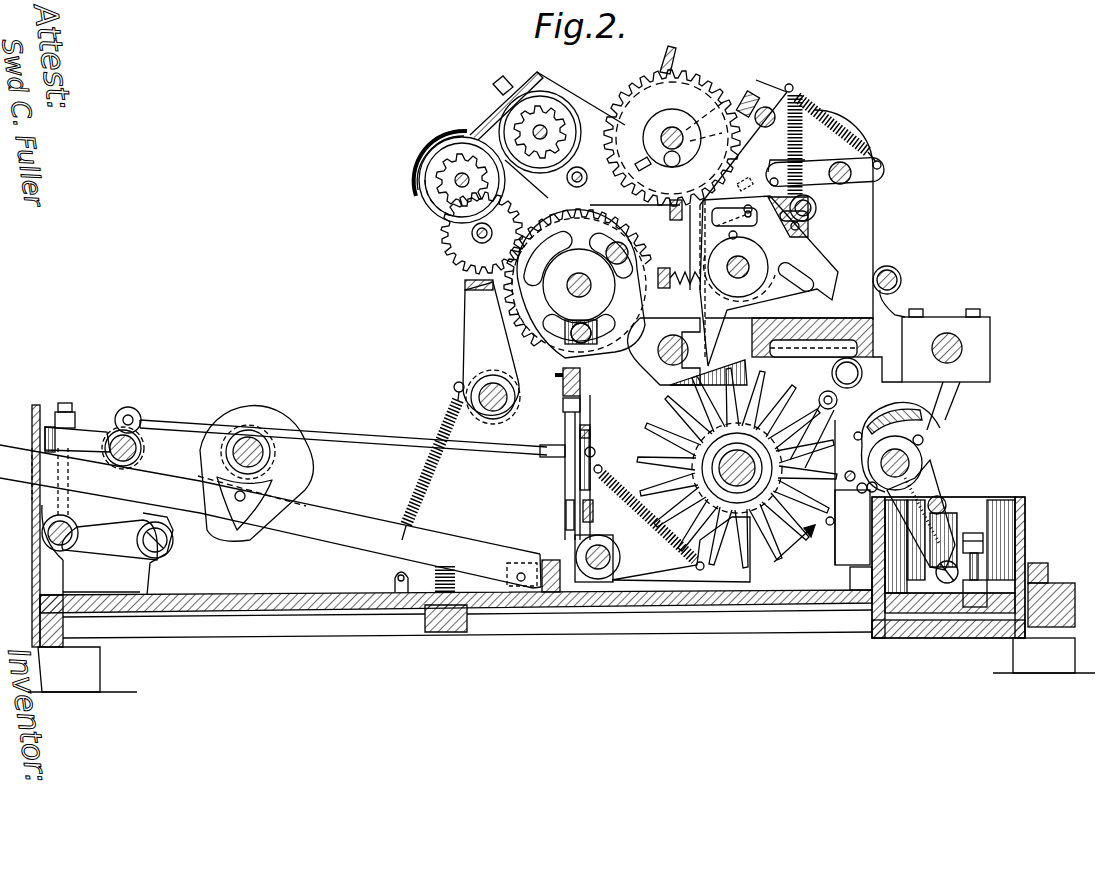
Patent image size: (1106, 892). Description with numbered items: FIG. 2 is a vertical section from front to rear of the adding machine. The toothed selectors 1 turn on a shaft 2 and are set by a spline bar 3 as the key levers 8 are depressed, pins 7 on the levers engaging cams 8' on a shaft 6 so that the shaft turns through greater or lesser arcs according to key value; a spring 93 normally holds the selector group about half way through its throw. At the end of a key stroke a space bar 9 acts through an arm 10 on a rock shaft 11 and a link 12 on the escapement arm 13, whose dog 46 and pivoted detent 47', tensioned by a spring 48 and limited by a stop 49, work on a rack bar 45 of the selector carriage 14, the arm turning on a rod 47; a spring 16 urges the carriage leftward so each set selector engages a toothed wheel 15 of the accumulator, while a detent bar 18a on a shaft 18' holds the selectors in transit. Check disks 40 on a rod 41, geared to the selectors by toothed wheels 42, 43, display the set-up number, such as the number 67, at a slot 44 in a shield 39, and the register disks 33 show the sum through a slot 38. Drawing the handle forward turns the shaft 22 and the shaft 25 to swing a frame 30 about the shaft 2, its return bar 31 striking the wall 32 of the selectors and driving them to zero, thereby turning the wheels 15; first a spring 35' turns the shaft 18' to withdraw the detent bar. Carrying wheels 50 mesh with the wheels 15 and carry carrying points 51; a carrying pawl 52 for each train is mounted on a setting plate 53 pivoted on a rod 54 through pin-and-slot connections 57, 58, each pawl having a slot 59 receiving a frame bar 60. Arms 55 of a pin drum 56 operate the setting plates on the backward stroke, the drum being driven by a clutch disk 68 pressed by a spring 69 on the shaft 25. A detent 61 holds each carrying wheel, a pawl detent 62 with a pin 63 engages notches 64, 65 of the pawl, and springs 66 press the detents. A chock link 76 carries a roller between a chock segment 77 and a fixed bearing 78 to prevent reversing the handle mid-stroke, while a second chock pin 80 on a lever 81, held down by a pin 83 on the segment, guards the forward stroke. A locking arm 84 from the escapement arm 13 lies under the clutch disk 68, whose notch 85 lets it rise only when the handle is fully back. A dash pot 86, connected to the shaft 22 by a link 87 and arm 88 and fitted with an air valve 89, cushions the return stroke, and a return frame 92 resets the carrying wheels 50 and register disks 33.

The toothed selectors 1 is at (503, 322).
The shaft 2 is at (577, 283).
The spline bar 3 is at (688, 339).
The shaft 6 is at (256, 440).
The pins 7 is at (228, 494).
The key levers 8 is at (270, 516).
The cams 8' is at (249, 516).
The space bar 9 is at (66, 548).
The arm 10 is at (82, 428).
The rock shaft 11 is at (140, 425).
The link 12 is at (350, 438).
The escapement arm 13 is at (565, 442).
The selector carriage 14 is at (558, 378).
The toothed wheels 15 is at (570, 182).
The spring 16 is at (876, 360).
The detent bar 18a is at (466, 287).
The detent shaft 18' is at (493, 384).
The rear shaft 22 is at (916, 466).
The shaft 25 is at (730, 430).
The frame 30 is at (664, 266).
The return bar 31 is at (606, 250).
The wall 32 is at (591, 288).
The register disks 33 is at (560, 110).
The spring 35' is at (434, 487).
The slot 38 is at (505, 86).
The shield 39 is at (486, 128).
The check disks 40 is at (430, 208).
The rod 41 is at (440, 180).
The toothed wheel 42 is at (430, 153).
The toothed wheel 43 is at (446, 242).
The slot 44 is at (432, 128).
The rack bar 45 is at (562, 403).
The escapement dog 46 is at (565, 484).
The rod 47 is at (603, 514).
The pivoted detent 47' is at (602, 422).
The spring 48 is at (566, 515).
The stop 49 is at (593, 452).
The carrying wheels 50 is at (692, 92).
The carrying points 51 is at (670, 62).
The carrying pawl 52 is at (748, 205).
The setting plates 53 is at (805, 266).
The rod 54 is at (739, 266).
The arms 55 is at (776, 390).
The pin drum 56 is at (826, 429).
The pin and slot connection 57 is at (716, 226).
The pin and slot connection 58 is at (810, 292).
The slot 59 is at (816, 210).
The frame bar 60 is at (860, 190).
The detent 61 is at (738, 110).
The pawl detent 62 is at (852, 176).
The pin 63 is at (806, 118).
The notch 64 is at (738, 237).
The notch 65 is at (798, 165).
The springs 66 is at (840, 132).
The stop 67 is at (670, 208).
The clutch disk 68 is at (854, 496).
The spring 69 is at (652, 492).
The chock link 76 is at (852, 450).
The chock segment 77 is at (938, 418).
The fixed bearing 78 is at (850, 465).
The chock detent roller 80 is at (843, 520).
The lower chock lever 81 is at (838, 525).
The pin 83 is at (872, 415).
The locking arm 84 is at (621, 557).
The notch 85 is at (794, 553).
The dash pot 86 is at (918, 600).
The link 87 is at (950, 535).
The arm 88 is at (935, 488).
The adjustable air valve 89 is at (985, 545).
The return frame 92 is at (766, 106).
The spring 93 is at (890, 268).